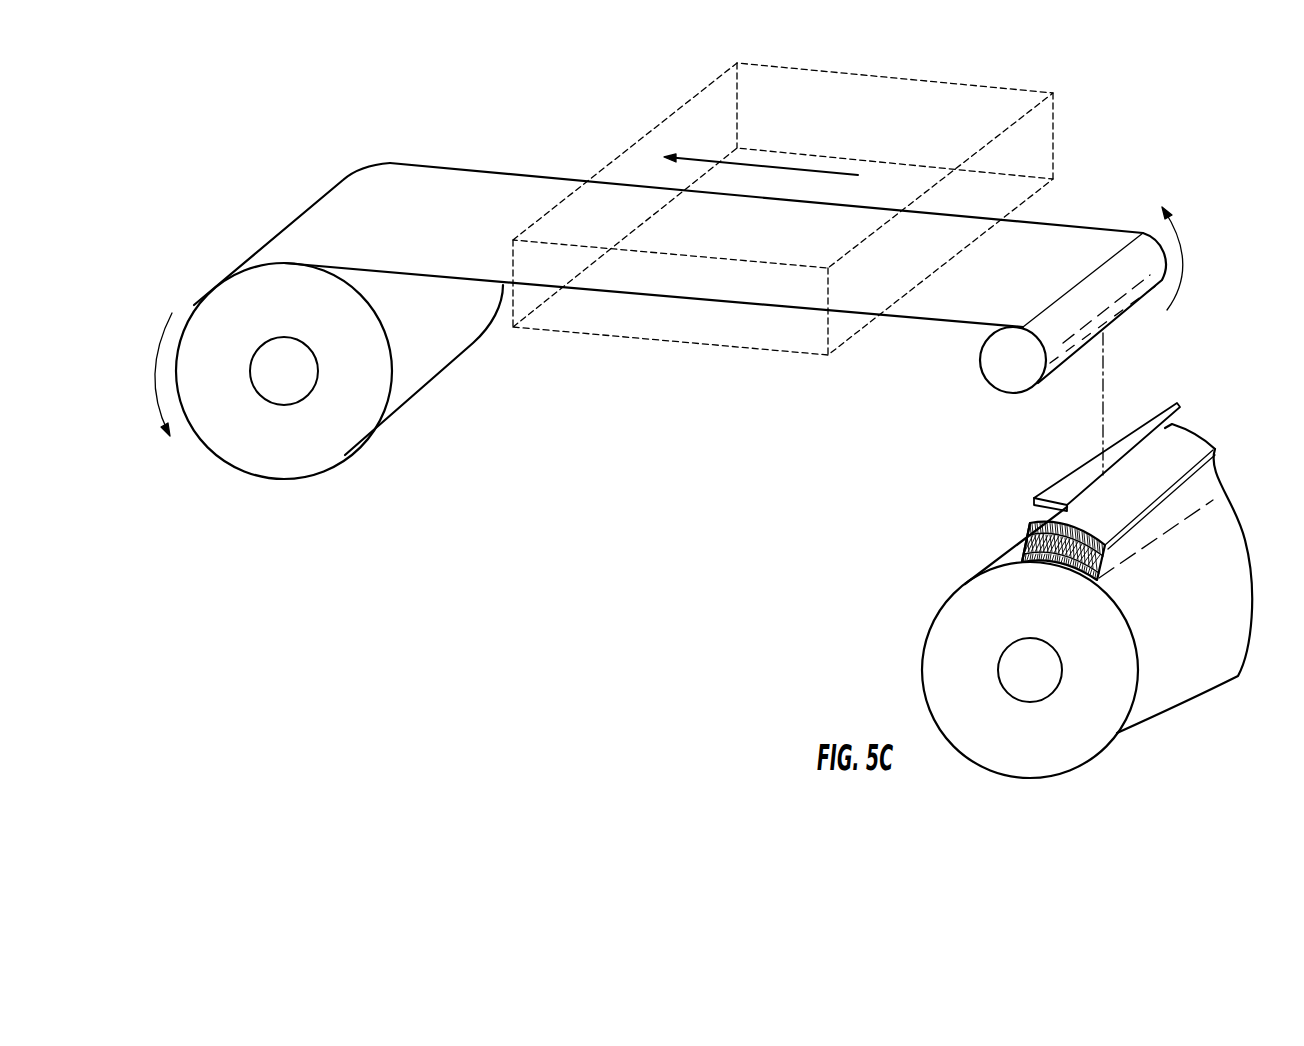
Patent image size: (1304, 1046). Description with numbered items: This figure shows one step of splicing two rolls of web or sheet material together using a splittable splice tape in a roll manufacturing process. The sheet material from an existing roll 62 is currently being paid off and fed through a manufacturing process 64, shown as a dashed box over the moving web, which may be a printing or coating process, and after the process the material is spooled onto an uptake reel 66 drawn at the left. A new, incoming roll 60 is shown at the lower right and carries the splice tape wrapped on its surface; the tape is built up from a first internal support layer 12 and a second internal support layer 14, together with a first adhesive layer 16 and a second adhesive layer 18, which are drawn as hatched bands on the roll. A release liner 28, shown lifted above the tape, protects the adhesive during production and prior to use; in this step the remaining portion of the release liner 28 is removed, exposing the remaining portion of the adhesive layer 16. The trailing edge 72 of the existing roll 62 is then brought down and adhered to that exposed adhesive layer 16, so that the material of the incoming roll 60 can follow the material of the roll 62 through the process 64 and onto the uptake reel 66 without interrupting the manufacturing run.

The first internal support layer 12 is at (1103, 553).
The second internal support layer 14 is at (1100, 568).
The first adhesive layer 16 is at (1030, 527).
The second adhesive layer 18 is at (1023, 560).
The release liner 28 is at (1162, 410).
The incoming roll 60 is at (1203, 714).
The roll 62 is at (998, 404).
The manufacturing process 64 is at (1032, 88).
The uptake reel 66 is at (287, 502).
The trailing edge 72 is at (1124, 313).